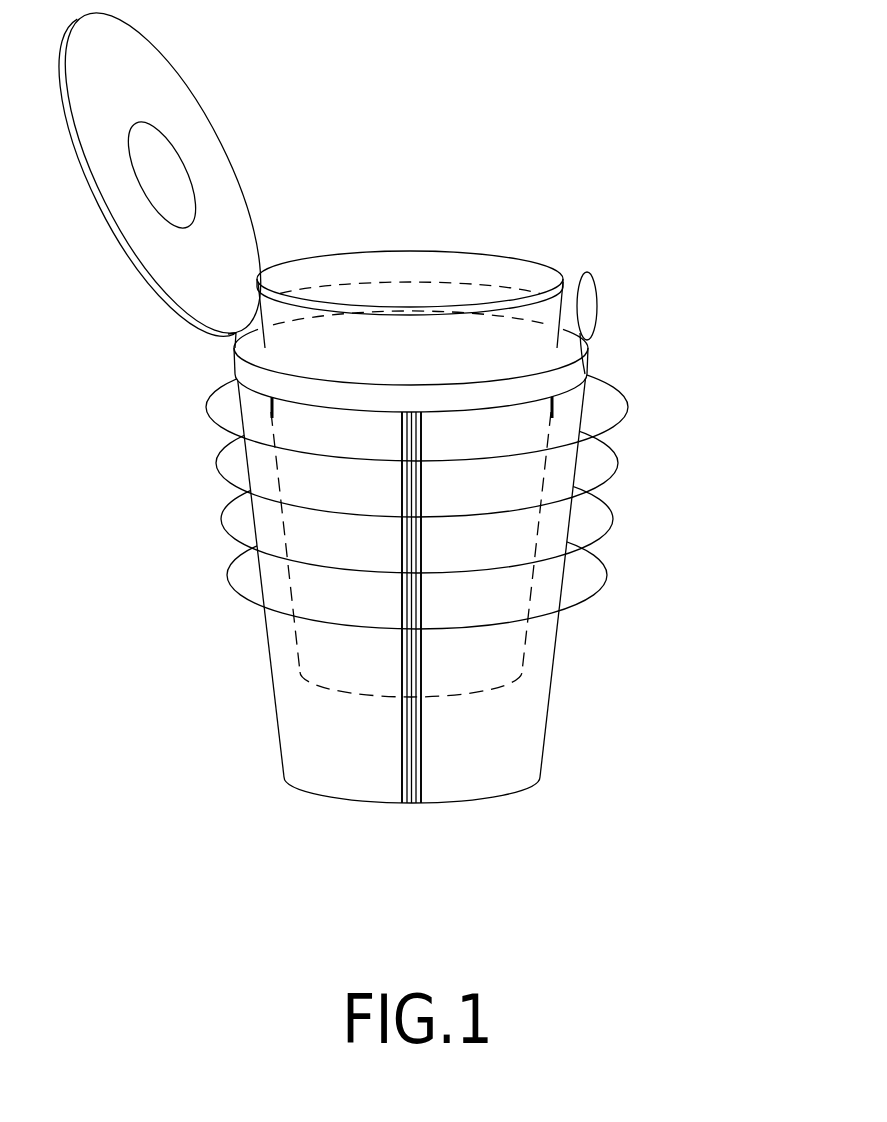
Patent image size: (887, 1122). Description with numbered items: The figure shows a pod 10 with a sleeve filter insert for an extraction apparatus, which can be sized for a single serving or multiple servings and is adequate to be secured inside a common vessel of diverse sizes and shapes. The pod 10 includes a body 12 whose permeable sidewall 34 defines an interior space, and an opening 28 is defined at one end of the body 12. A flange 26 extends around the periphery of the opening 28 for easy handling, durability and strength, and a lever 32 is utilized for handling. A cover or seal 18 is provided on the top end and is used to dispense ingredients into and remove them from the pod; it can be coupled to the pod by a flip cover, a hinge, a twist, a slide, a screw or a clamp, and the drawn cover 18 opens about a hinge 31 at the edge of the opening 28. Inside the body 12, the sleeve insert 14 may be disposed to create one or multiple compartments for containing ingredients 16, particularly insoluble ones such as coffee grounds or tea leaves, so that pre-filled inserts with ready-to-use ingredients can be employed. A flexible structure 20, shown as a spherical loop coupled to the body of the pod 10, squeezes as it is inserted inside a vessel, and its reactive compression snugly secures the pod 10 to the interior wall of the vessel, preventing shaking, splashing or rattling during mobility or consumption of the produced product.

The pod 10 is at (389, 401).
The body 12 is at (510, 757).
The sleeve 14 is at (510, 198).
The ingredients 16 is at (433, 290).
The sealing cover 18 is at (235, 175).
The flexible structure 20 is at (600, 537).
The flange 26 is at (277, 370).
The opening 28 is at (375, 250).
The hinge 31 is at (235, 332).
The lever 32 is at (590, 307).
The permeable sidewall 34 is at (312, 533).